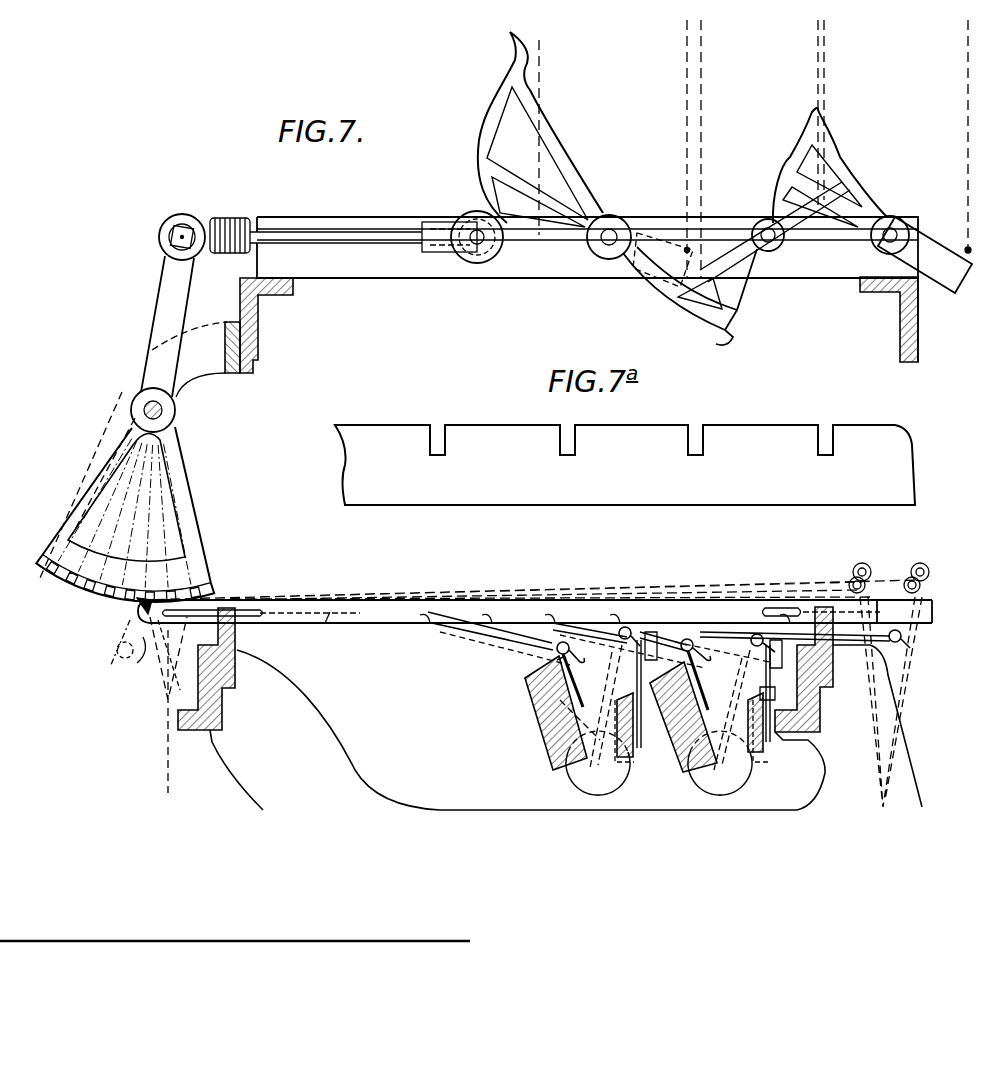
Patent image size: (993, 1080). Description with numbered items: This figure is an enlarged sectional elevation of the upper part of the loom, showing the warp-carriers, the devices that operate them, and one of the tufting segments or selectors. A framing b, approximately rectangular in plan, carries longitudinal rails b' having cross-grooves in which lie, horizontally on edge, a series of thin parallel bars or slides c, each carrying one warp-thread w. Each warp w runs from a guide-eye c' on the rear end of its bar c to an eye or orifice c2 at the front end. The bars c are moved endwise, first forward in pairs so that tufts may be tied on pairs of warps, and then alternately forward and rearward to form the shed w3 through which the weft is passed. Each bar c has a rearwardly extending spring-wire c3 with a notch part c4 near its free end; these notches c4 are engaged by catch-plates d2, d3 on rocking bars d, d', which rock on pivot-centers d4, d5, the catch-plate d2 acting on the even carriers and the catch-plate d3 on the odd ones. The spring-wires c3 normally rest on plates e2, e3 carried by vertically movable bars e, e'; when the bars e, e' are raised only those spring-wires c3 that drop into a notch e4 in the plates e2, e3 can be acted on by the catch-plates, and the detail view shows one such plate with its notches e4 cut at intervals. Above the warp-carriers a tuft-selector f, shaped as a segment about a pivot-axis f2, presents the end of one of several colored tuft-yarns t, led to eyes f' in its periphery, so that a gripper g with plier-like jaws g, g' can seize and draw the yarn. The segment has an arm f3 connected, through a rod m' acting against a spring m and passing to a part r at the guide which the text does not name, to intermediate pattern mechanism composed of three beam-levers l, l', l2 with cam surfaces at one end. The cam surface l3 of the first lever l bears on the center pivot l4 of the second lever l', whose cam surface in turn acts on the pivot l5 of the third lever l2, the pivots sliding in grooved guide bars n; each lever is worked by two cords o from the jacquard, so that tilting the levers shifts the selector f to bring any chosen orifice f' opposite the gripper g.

In FIG. 7, the grooved guide bar n is at (587, 289).
In FIG. 7, the spring m is at (230, 221).
In FIG. 7, the rod m' is at (336, 216).
In FIG. 7, the block r is at (462, 241).
In FIG. 7, the arm f3 is at (184, 305).
In FIG. 7, the pivot-axis f2 is at (165, 410).
In FIG. 7, the tuft-selector f is at (124, 497).
In FIG. 7, the delivery-orifice f' is at (123, 570).
In FIG. 7, the tuft-yarn t is at (72, 580).
In FIG. 7, the warp-carrying bar c is at (535, 613).
In FIG. 7, the warp-thread w is at (707, 589).
In FIG. 7, the guide-eye c' is at (889, 670).
In FIG. 7, the longitudinal rail b' is at (518, 669).
In FIG. 7, the framing b is at (536, 713).
In FIG. 7, the eye c2 is at (135, 604).
In FIG. 7, the gripper g is at (106, 643).
In FIG. 7, the gripper jaw g' is at (135, 660).
In FIG. 7, the shed w3 is at (169, 655).
In FIG. 7, the spring-wire c3 is at (548, 645).
In FIG. 7, the notch part c4 is at (626, 630).
In FIG. 7, the rocking bar d is at (550, 712).
In FIG. 7, the catch-plate d3 is at (688, 711).
In FIG. 7, the catch-plate d2 is at (557, 663).
In FIG. 7, the vertically-movable bar e is at (637, 727).
In FIG. 7, the vertically-movable bar e' is at (771, 727).
In FIG. 7, the plate e2 is at (636, 680).
In FIG. 7, the plate e3 is at (765, 692).
In FIG. 7, the notch e4 is at (640, 660).
In FIG. 7a, the notch e4 is at (438, 428).
In FIG. 7, the pivot-center d4 is at (598, 763).
In FIG. 7, the pivot-center d5 is at (720, 763).
In FIG. 7, the rocking bar d' is at (655, 719).
In FIG. 7, the cord o is at (688, 120).
In FIG. 7, the cam surface l3 is at (788, 166).
In FIG. 7, the pivot center l5 is at (608, 245).
In FIG. 7, the beam-lever l2 is at (736, 263).
In FIG. 7, the center pivot l4 is at (789, 205).
In FIG. 7, the beam-lever l' is at (830, 168).
In FIG. 7, the beam-lever l is at (921, 254).